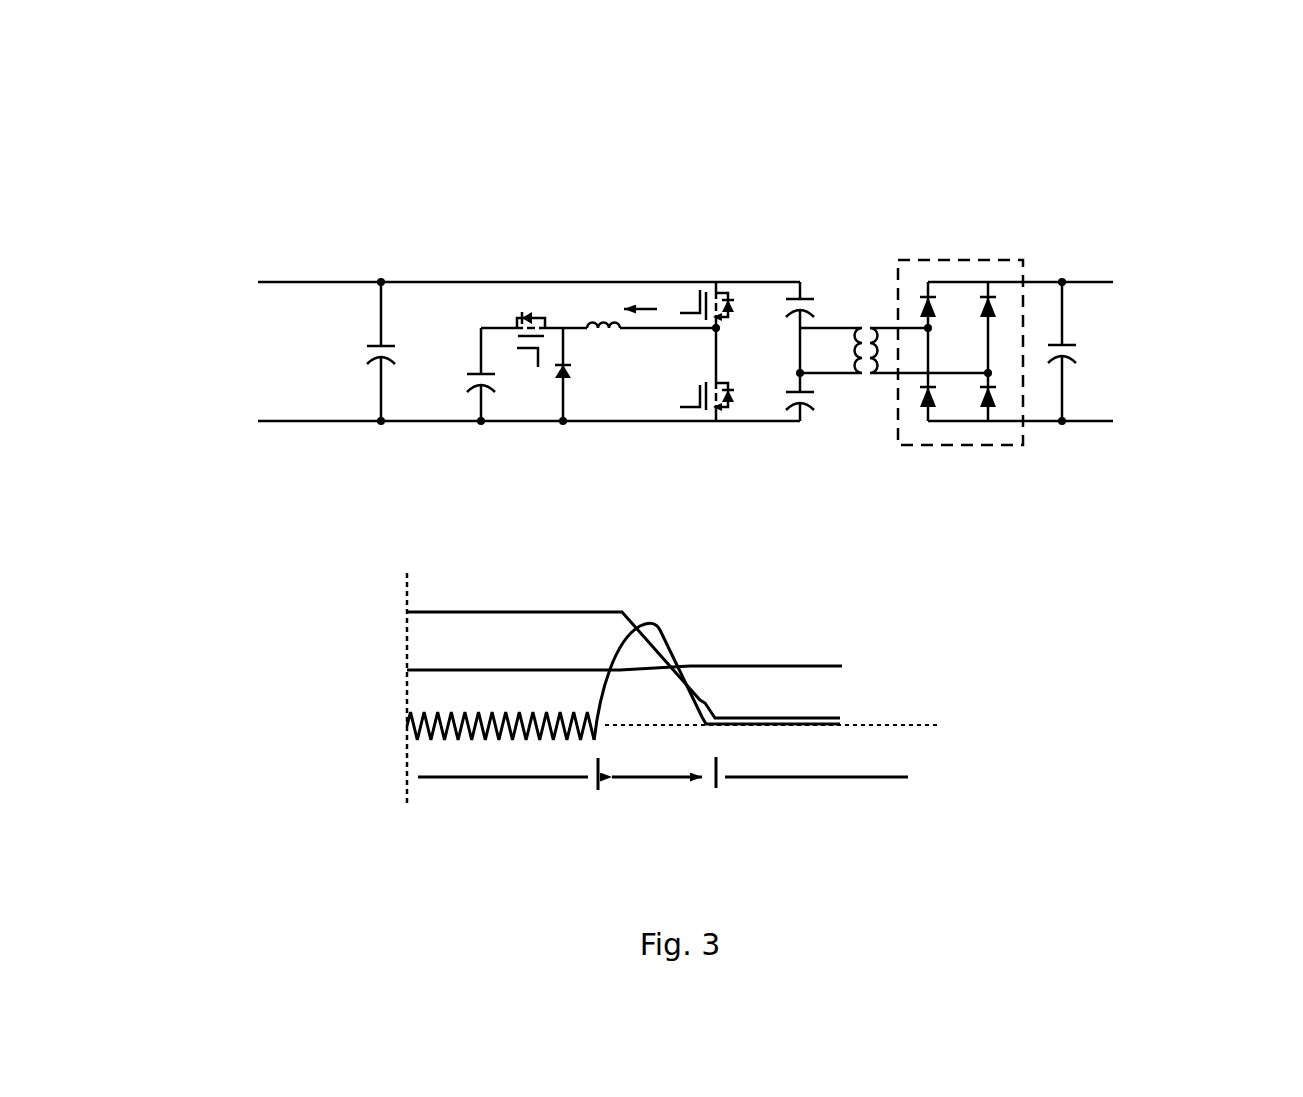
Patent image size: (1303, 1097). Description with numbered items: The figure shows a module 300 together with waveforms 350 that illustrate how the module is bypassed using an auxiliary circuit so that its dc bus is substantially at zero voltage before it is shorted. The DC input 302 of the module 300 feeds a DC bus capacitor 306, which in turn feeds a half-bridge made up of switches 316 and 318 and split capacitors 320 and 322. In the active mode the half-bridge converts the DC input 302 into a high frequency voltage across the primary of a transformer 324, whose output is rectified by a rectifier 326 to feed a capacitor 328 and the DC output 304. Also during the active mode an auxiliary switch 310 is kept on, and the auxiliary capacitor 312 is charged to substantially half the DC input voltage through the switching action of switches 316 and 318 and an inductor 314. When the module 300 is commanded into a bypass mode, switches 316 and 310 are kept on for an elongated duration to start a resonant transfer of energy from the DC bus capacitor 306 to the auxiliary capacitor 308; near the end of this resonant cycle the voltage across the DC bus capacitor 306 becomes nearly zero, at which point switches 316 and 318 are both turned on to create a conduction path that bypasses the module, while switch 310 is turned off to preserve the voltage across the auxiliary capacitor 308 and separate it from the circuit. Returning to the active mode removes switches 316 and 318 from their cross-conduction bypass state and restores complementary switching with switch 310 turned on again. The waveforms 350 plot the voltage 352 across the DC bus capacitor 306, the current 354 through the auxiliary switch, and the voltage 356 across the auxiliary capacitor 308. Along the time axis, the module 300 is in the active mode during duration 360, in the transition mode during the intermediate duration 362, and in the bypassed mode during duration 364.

The module 300 is at (400, 136).
The DC input 302 is at (253, 352).
The DC output 304 is at (1152, 332).
The DC bus capacitor 306 is at (370, 345).
The auxiliary capacitor 308 is at (470, 360).
The auxiliary switch 310 is at (510, 318).
The auxiliary capacitor 312 is at (553, 385).
The inductor 314 is at (592, 318).
The switch 316 is at (690, 312).
The switch 318 is at (695, 410).
The split capacitor 320 is at (808, 292).
The split capacitor 322 is at (806, 422).
The transformer 324 is at (860, 320).
The rectifier 326 is at (945, 252).
The capacitor 328 is at (1068, 340).
The waveforms 350 is at (352, 712).
The voltage across DC capacitor 352 is at (537, 608).
The current through auxiliary switch 354 is at (673, 632).
The voltage across auxiliary capacitor 356 is at (805, 660).
The duration 360 is at (497, 783).
The intermediate duration 362 is at (655, 783).
The duration 364 is at (848, 783).